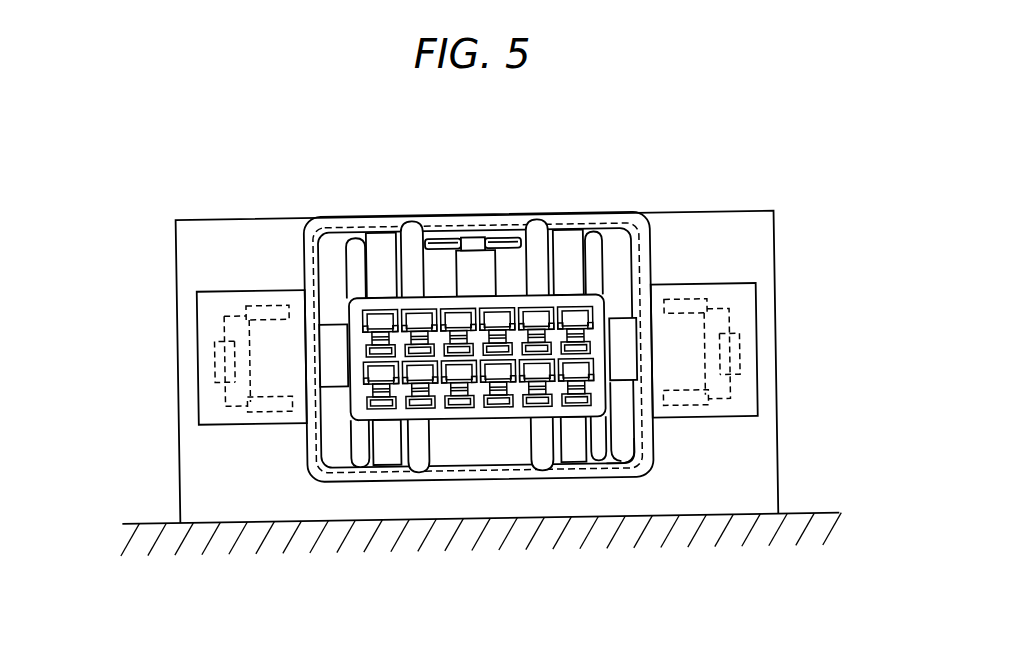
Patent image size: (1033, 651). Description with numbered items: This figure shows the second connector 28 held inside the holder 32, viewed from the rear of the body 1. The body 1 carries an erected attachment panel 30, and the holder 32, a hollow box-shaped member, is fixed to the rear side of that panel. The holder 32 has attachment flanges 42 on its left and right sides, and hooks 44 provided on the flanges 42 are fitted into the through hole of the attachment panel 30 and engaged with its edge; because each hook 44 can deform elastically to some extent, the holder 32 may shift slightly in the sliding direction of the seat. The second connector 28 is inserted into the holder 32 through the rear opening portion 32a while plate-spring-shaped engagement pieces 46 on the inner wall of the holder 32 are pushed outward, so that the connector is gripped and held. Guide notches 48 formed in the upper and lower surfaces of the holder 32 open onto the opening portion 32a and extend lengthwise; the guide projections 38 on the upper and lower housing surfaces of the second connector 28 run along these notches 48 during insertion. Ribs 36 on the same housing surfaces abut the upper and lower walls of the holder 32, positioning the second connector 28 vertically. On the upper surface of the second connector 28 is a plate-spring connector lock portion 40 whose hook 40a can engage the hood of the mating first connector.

The body 1 is at (820, 510).
The second connector 28 is at (480, 428).
The attachment panel 30 is at (724, 214).
The holder 32 is at (664, 248).
The opening portion 32a is at (634, 456).
The ribs 36 is at (357, 236).
The guide projections 38 is at (412, 247).
The connector lock portion 40 is at (457, 250).
The hook 40a is at (480, 247).
The attachment flanges 42 is at (752, 412).
The hooks 44 is at (297, 396).
The engagement pieces 46 is at (333, 333).
The guide notches 48 is at (510, 223).